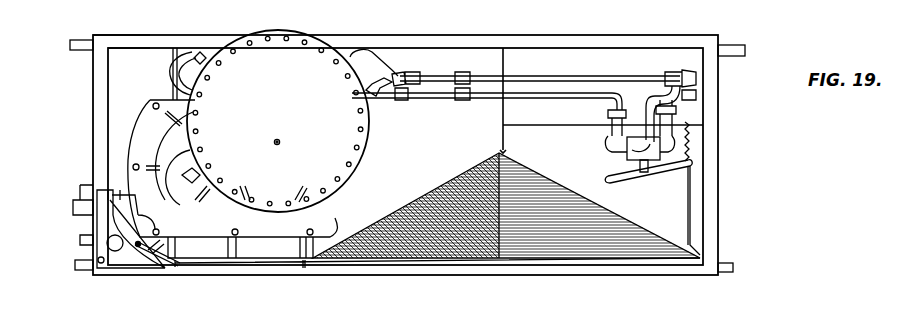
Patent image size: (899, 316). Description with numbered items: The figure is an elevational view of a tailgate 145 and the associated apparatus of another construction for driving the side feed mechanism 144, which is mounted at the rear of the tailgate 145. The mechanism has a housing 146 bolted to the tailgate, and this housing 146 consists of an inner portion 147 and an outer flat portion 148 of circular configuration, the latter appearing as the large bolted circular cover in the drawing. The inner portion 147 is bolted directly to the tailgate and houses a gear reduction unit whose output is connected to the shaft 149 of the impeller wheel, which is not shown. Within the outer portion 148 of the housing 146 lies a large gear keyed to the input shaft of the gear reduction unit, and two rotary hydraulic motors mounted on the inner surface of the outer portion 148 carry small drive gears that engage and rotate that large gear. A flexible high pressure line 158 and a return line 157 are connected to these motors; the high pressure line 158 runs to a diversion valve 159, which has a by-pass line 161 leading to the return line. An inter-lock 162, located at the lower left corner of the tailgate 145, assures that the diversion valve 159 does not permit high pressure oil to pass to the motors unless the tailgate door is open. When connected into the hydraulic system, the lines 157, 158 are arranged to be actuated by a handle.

The side feed mechanism 144 is at (152, 33).
The tailgate 145 is at (121, 41).
The housing 146 is at (300, 30).
The inner portion 147 is at (206, 230).
The outer flat portion 148 is at (356, 118).
The shaft 149 is at (183, 182).
The return line 157 is at (458, 100).
The flexible high pressure line 158 is at (448, 76).
The diversion valve 159 is at (626, 160).
The by-pass line 161 is at (678, 108).
The inter-lock 162 is at (115, 264).